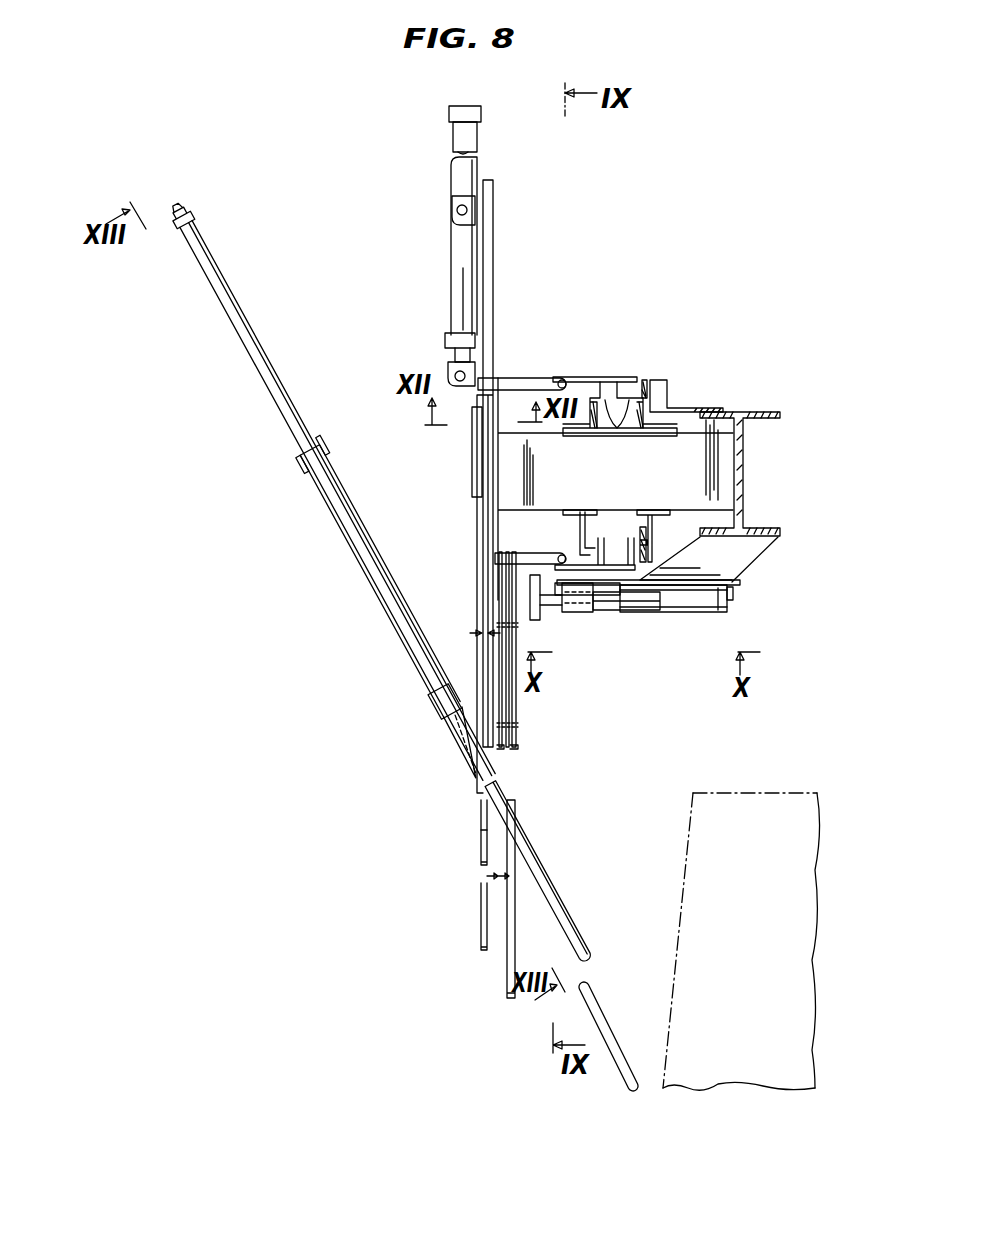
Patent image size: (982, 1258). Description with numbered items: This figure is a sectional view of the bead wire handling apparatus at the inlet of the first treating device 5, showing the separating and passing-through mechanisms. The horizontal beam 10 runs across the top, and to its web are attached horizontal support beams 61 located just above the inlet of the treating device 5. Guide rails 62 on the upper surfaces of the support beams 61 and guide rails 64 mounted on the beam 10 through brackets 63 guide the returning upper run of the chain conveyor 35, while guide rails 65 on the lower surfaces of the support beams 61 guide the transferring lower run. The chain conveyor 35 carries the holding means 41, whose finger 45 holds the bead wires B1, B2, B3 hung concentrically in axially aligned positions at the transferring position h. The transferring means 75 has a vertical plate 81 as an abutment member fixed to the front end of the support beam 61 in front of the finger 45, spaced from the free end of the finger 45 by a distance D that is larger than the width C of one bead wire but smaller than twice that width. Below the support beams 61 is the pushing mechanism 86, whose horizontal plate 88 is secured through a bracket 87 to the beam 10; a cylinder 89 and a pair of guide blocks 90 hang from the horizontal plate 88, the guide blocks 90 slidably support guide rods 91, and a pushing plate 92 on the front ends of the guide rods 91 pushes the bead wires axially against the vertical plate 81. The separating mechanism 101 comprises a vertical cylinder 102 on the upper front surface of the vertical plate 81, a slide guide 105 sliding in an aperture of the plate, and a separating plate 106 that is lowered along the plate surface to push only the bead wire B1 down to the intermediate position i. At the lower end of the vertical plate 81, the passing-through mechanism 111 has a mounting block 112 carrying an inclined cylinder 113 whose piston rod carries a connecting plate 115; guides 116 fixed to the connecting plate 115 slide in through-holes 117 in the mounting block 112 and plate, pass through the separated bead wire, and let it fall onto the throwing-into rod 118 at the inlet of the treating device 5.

The first treating device 5 is at (770, 793).
The horizontal beam 10 is at (745, 445).
The chain conveyor 35 is at (610, 382).
The holding means 41 is at (600, 376).
The finger 45 is at (530, 378).
The support beam 61 is at (716, 493).
The guide rail 62 is at (603, 405).
The bracket 63 is at (666, 397).
The guide rail 64 is at (644, 390).
The guide rail 65 is at (582, 550).
The transferring means 75 is at (503, 334).
The vertical plate 81 is at (491, 336).
The pushing mechanism 86 is at (655, 605).
The bracket 87 is at (740, 540).
The horizontal plate 88 is at (735, 598).
The cylinder 89 is at (698, 596).
The guide block 90 is at (572, 601).
The guide rod 91 is at (592, 601).
The pushing plate 92 is at (538, 605).
The separating mechanism 101 is at (440, 250).
The vertical cylinder 102 is at (458, 184).
The slide guide 105 is at (472, 465).
The separating plate 106 is at (493, 386).
The passing-through mechanism 111 is at (323, 493).
The mounting block 112 is at (442, 718).
The cylinder 113 is at (352, 548).
The connecting plate 115 is at (193, 218).
The guide 116 is at (268, 380).
The through-hole 117 is at (464, 736).
The throwing-into rod 118 is at (605, 1021).
The bead wire B1 is at (500, 748).
The bead wire B2 is at (508, 748).
The bead wire B3 is at (515, 746).
The width of one bead wire C is at (510, 878).
The distance D is at (480, 630).
The transferring position h is at (518, 692).
The intermediate position i is at (482, 842).